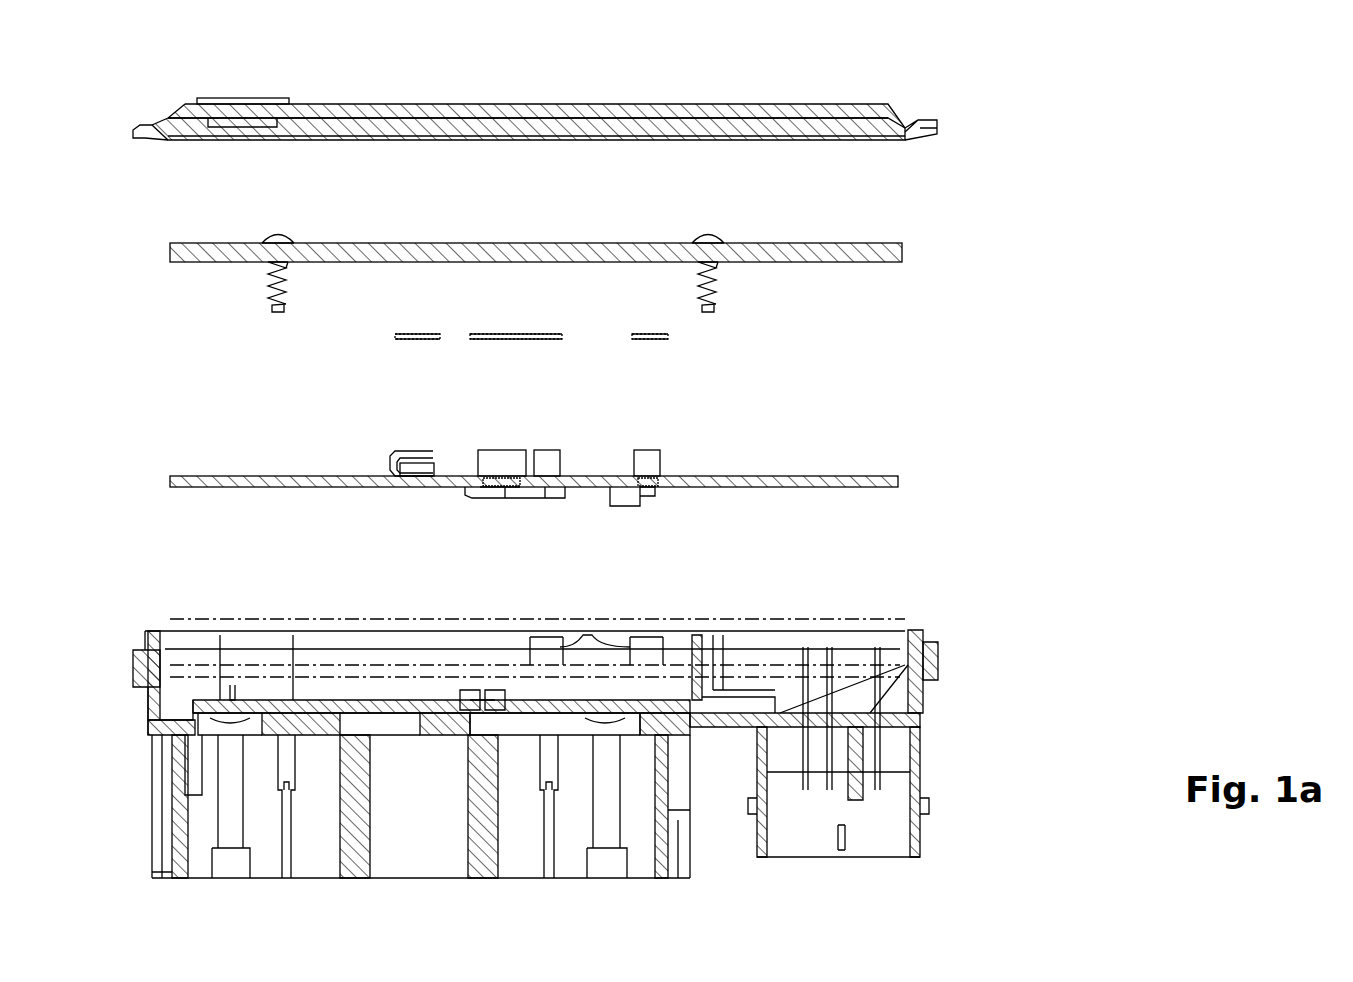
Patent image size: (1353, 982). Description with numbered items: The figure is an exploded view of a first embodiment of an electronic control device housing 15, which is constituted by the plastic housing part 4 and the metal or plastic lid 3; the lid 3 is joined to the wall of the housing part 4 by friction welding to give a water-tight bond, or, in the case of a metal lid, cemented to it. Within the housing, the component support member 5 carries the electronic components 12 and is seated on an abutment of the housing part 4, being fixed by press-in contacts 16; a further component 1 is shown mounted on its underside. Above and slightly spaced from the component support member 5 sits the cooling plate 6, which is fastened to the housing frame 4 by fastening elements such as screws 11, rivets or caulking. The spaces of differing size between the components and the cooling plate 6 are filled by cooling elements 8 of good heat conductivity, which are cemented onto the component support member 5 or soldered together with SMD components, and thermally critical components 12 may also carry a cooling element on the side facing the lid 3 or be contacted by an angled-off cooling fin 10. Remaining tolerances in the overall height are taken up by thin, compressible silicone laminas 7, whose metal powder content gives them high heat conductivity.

The electronic components on underside of circuit board 1 is at (510, 496).
The lid 3 is at (865, 108).
The housing part 4 is at (920, 703).
The component support member 5 is at (862, 476).
The cooling plate 6 is at (865, 244).
The silicone laminas 7 is at (482, 334).
The cooling elements 8 is at (646, 450).
The angled-off cooling fin 10 is at (400, 455).
The screws 11 is at (288, 292).
The electronic components 12 is at (433, 470).
The electronic control device housing 15 is at (1037, 326).
The press-in contacts 16 is at (598, 640).